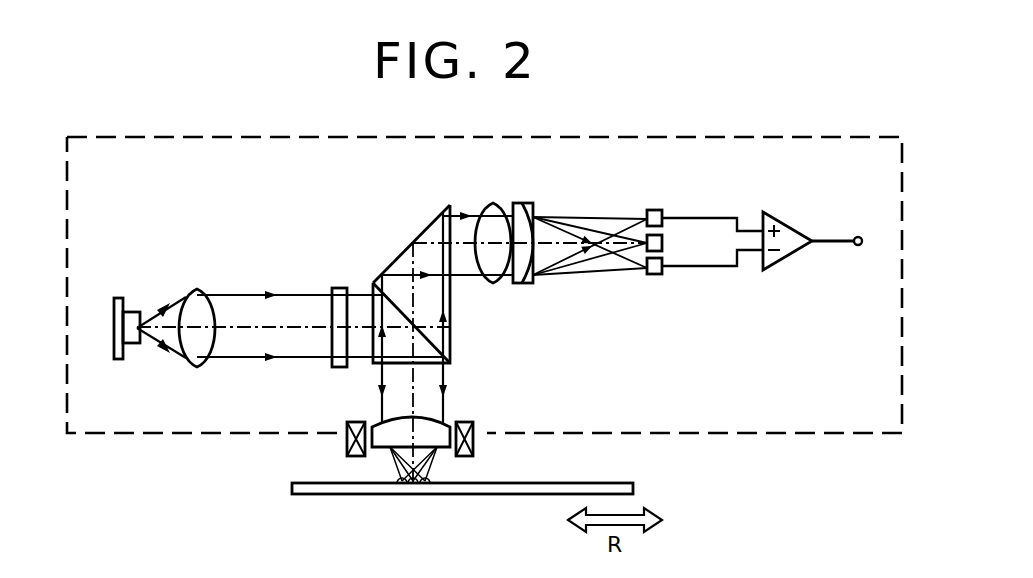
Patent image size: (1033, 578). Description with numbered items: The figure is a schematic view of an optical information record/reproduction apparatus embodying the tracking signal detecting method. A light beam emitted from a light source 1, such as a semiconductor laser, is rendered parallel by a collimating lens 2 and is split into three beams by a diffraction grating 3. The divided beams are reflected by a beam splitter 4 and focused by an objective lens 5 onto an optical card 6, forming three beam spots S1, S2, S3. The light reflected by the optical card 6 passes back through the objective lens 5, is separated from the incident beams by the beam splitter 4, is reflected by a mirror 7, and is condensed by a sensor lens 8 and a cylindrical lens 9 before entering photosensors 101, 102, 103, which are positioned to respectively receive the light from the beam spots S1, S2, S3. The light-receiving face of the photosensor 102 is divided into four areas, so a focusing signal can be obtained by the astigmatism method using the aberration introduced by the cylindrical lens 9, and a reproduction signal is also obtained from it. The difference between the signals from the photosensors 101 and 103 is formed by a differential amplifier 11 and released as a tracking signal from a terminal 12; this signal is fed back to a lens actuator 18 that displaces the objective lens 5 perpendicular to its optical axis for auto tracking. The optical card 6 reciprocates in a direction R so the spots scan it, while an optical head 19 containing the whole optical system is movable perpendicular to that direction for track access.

The light source 1 is at (132, 302).
The collimating lens 2 is at (195, 288).
The diffraction grating 3 is at (337, 287).
The beam splitter 4 is at (452, 360).
The objective lens 5 is at (447, 423).
The optical card 6 is at (635, 488).
The mirror 7 is at (440, 217).
The sensor lens 8 is at (493, 203).
The cylindrical lens 9 is at (525, 203).
The photosensor 101 is at (652, 209).
The photosensor 102 is at (662, 243).
The photosensor 103 is at (652, 275).
The differential amplifier 11 is at (798, 228).
The terminal 12 is at (858, 237).
The lens actuator 18 is at (472, 448).
The optical head 19 is at (833, 433).
The beam spot S1 is at (423, 490).
The beam spot S2 is at (413, 493).
The beam spot S3 is at (400, 493).